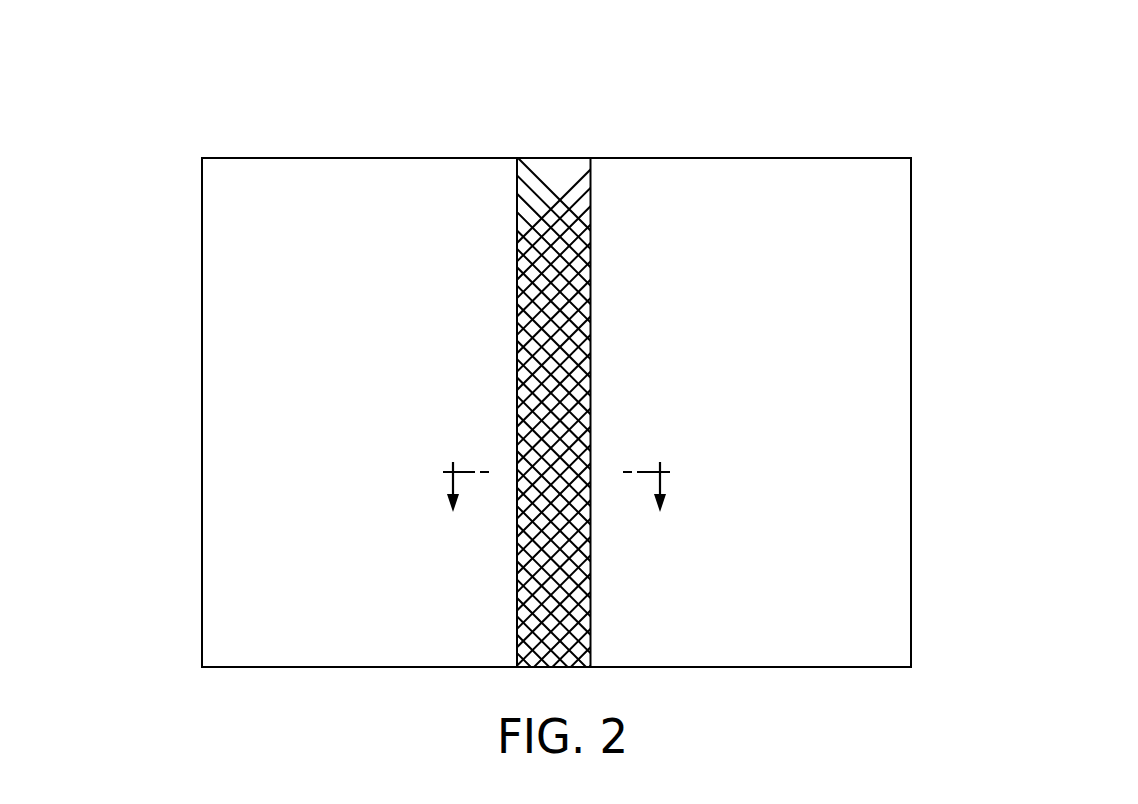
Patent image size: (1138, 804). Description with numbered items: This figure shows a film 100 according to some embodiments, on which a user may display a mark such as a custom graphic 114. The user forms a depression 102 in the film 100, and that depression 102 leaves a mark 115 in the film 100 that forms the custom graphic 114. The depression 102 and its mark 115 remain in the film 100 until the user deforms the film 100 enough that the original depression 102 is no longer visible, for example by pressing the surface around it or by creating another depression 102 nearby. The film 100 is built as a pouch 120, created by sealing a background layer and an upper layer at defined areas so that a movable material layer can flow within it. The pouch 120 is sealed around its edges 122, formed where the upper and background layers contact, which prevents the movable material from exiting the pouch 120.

The film 100 is at (1040, 199).
The depression 102 is at (577, 174).
The custom graphic 114 is at (536, 261).
The mark 115 is at (541, 170).
The pouch 120 is at (800, 183).
The edges 122 is at (317, 158).